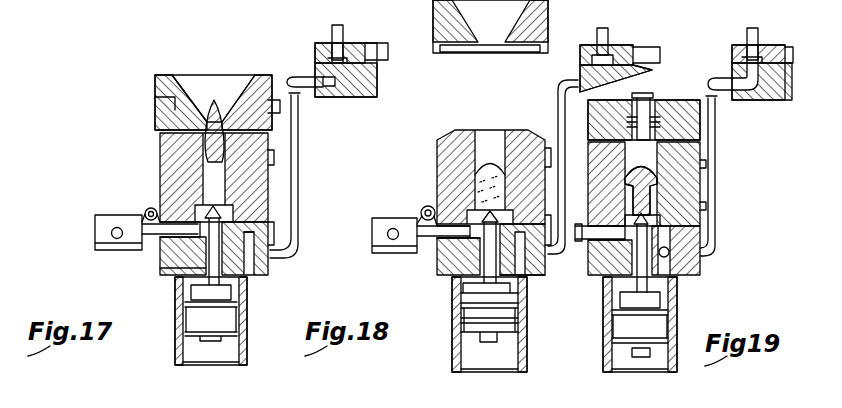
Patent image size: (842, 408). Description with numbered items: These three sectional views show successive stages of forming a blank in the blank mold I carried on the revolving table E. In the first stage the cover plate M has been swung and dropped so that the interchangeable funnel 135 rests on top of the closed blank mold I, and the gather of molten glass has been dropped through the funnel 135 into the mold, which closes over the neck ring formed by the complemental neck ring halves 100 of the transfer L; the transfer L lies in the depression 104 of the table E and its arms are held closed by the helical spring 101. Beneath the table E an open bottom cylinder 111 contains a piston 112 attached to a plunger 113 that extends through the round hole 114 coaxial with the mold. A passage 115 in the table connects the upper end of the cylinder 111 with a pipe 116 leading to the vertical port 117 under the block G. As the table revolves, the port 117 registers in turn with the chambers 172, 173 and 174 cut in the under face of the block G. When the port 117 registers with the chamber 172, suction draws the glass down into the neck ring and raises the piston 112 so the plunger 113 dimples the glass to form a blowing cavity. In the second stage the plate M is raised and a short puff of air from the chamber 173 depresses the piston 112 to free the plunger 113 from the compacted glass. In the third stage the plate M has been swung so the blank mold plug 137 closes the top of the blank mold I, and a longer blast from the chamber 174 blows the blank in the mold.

In FIG. 17, the funnel 135 is at (155, 84).
In FIG. 18, the funnel 135 is at (490, 26).
In FIG. 17, the cover plate M is at (155, 123).
In FIG. 19, the cover plate M is at (718, 124).
In FIG. 17, the blank mold I is at (206, 204).
In FIG. 18, the blank mold I is at (437, 168).
In FIG. 19, the blank mold I is at (588, 178).
In FIG. 17, the helical spring 101 is at (149, 208).
In FIG. 17, the table E is at (175, 246).
In FIG. 18, the table E is at (652, 77).
In FIG. 19, the table E is at (782, 125).
In FIG. 17, the transfer L is at (146, 244).
In FIG. 18, the transfer L is at (421, 222).
In FIG. 17, the plunger 113 is at (175, 258).
In FIG. 17, the round hole 114 is at (180, 270).
In FIG. 17, the passage 115 is at (258, 262).
In FIG. 17, the pipe 116 is at (298, 232).
In FIG. 18, the pipe 116 is at (558, 103).
In FIG. 19, the pipe 116 is at (715, 172).
In FIG. 17, the piston 112 is at (247, 312).
In FIG. 17, the open bottom cylinder 111 is at (247, 348).
In FIG. 17, the chamber 172 is at (320, 58).
In FIG. 17, the vertical port 117 is at (328, 72).
In FIG. 17, the block G is at (378, 45).
In FIG. 18, the block G is at (655, 47).
In FIG. 19, the block G is at (781, 46).
In FIG. 18, the chamber 173 is at (582, 63).
In FIG. 18, the depression 104 is at (443, 240).
In FIG. 19, the depression 104 is at (703, 228).
In FIG. 18, the neck ring halves 100 is at (542, 262).
In FIG. 19, the chamber 174 is at (735, 58).
In FIG. 19, the blank mold plug 137 is at (700, 146).